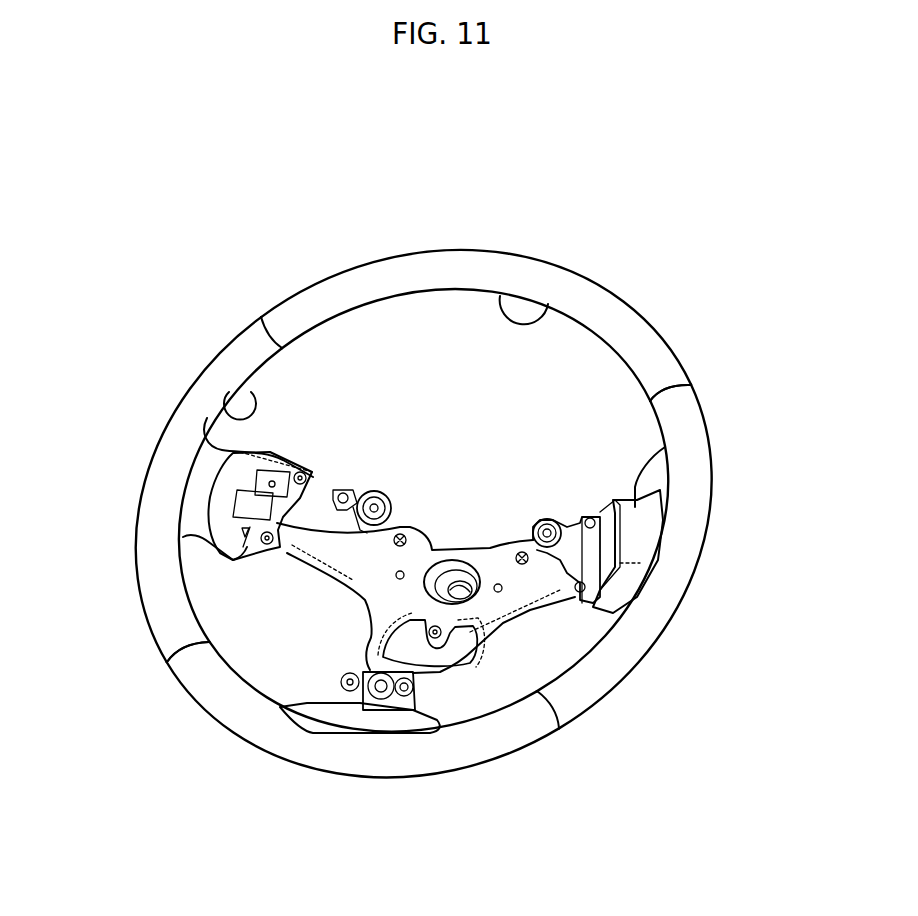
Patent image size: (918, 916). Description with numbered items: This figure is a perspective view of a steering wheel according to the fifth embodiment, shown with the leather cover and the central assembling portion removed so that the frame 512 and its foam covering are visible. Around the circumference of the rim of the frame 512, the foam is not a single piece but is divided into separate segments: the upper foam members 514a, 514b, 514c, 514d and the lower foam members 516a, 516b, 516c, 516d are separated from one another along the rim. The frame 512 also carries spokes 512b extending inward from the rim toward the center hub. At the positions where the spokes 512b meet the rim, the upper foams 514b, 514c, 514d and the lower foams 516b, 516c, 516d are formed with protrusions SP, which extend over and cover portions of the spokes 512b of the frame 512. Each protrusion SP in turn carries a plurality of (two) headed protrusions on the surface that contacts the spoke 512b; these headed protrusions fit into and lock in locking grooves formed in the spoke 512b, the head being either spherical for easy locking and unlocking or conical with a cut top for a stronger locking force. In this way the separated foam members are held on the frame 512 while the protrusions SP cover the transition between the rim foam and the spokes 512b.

The frame 512 is at (340, 557).
The spoke 512b is at (300, 550).
The upper foam member 514a is at (462, 262).
The upper foam member 514b is at (200, 373).
The upper foam member 514c is at (437, 746).
The upper foam member 514d is at (647, 637).
The lower foam member 516a is at (547, 312).
The lower foam member 516b is at (250, 393).
The lower foam member 516c is at (293, 762).
The lower foam member 516d is at (690, 584).
The protrusion sp is at (203, 472).